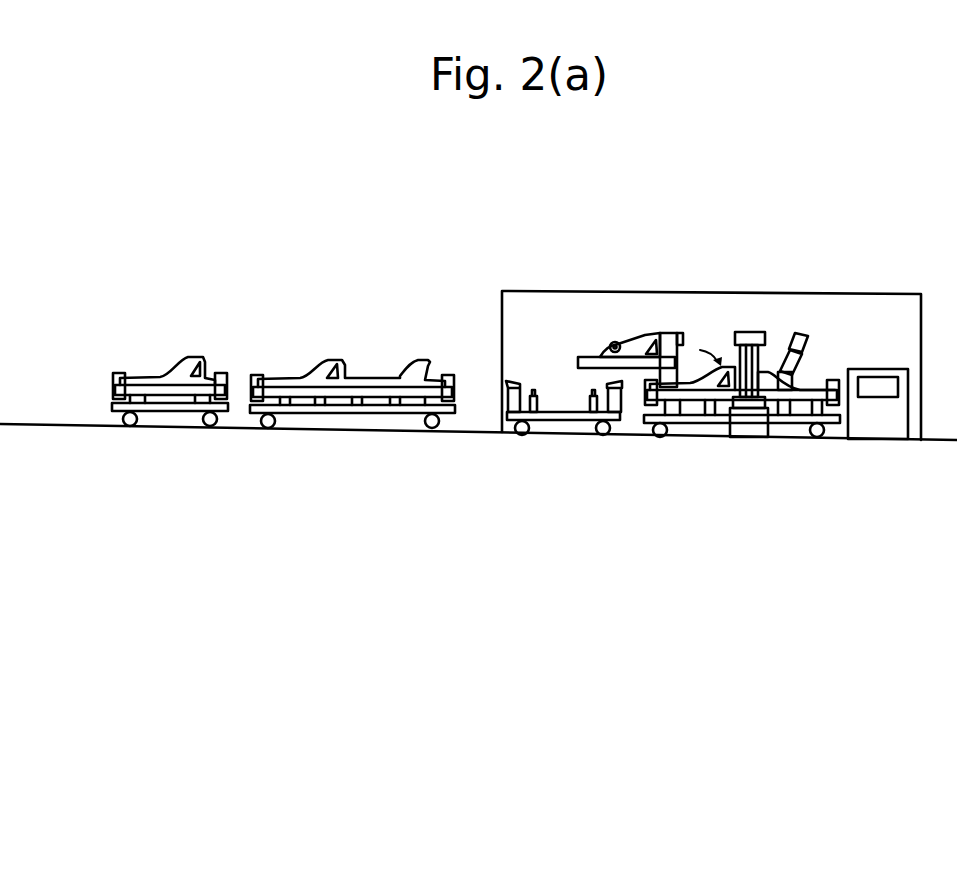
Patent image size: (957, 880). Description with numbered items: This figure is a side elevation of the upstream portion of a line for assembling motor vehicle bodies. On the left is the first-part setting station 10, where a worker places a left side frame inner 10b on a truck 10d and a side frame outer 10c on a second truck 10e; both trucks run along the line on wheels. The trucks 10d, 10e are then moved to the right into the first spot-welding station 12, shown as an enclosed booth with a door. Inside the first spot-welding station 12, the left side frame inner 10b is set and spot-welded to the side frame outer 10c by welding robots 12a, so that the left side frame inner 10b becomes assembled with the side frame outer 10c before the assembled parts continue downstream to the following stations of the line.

The first-part setting station 10 is at (242, 452).
The left side frame inner 10b is at (170, 377).
The side frame outer 10c is at (298, 370).
The truck 10d is at (138, 428).
The truck 10e is at (325, 432).
The first spot-welding station 12 is at (655, 466).
The welding robot 12a is at (745, 440).